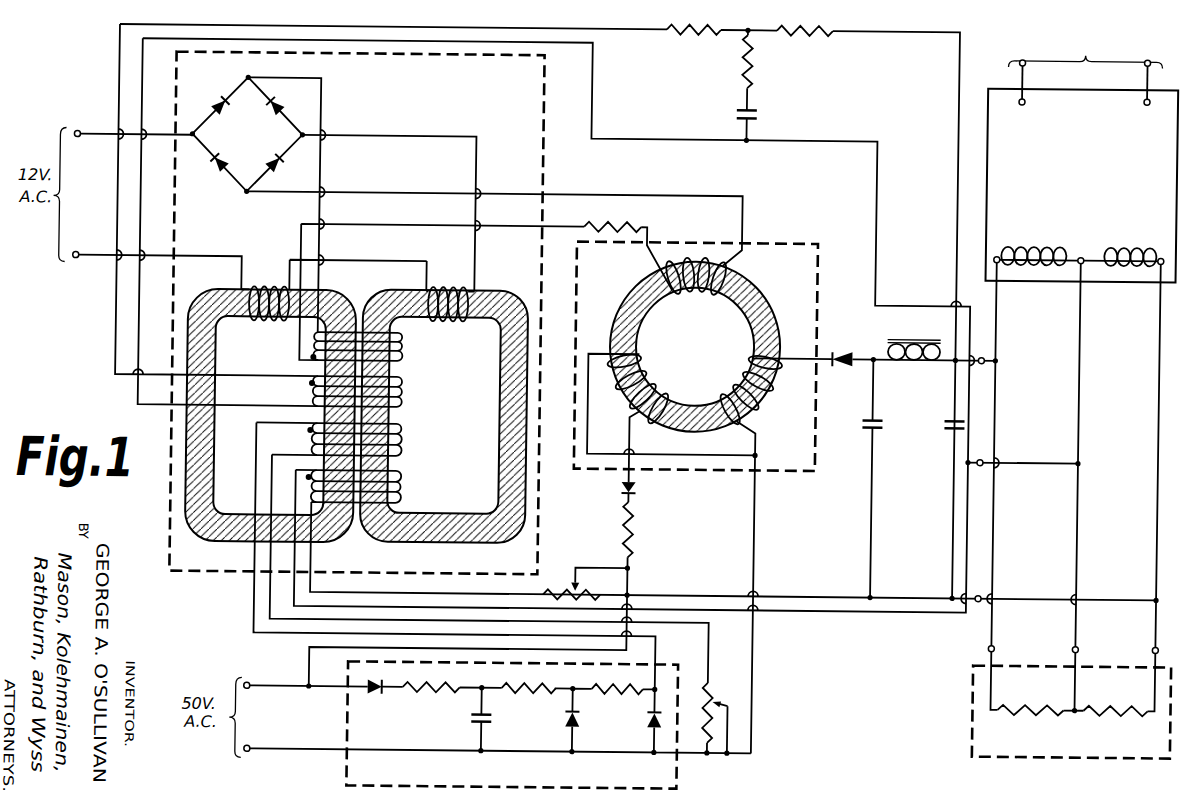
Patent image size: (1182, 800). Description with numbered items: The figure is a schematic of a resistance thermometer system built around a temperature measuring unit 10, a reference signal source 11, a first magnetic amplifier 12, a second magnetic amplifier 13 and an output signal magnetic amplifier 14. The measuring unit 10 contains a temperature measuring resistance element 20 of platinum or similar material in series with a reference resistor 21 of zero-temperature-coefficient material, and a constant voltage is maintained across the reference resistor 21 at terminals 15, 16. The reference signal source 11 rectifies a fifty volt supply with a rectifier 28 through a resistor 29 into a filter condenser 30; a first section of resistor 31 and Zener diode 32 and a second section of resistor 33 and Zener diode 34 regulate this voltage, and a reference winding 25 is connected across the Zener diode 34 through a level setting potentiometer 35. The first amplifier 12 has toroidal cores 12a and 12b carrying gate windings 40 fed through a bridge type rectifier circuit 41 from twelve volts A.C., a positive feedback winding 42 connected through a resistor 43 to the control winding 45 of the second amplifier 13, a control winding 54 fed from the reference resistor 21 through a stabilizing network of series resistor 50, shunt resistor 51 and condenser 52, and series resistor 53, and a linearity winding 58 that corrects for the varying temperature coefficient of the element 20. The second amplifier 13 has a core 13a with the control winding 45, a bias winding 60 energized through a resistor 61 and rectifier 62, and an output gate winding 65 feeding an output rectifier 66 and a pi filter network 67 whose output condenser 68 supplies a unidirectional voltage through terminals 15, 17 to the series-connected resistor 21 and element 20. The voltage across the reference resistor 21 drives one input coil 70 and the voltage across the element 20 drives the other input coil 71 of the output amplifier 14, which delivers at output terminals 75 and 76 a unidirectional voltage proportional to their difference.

The temperature measuring unit 10 is at (976, 737).
The reference signal source 11 is at (352, 758).
The first magnetic amplifier 12 is at (236, 574).
The toroidal core 12a is at (330, 296).
The toroidal core 12b is at (518, 288).
The second magnetic amplifier 13 is at (792, 234).
The core 13a is at (772, 302).
The output signal magnetic amplifier 14 is at (1094, 76).
The terminal 15 is at (990, 348).
The terminal 16 is at (987, 459).
The terminal 17 is at (987, 586).
The temperature measuring resistance element 20 is at (1138, 708).
The reference resistor 21 is at (1048, 708).
The reference winding 25 is at (434, 444).
The rectifier 28 is at (383, 692).
The resistor 29 is at (436, 692).
The filter condenser 30 is at (481, 716).
The resistor 31 is at (540, 691).
The Zener diode 32 is at (574, 716).
The resistor 33 is at (630, 691).
The Zener diode 34 is at (656, 716).
The level setting potentiometer 35 is at (737, 698).
The gate windings 40 is at (466, 282).
The bridge type rectifier circuit 41 is at (258, 143).
The positive feedback winding 42 is at (436, 357).
The resistor 43 is at (618, 220).
The control winding 45 is at (728, 276).
The series resistor 50 is at (806, 32).
The resistor 51 is at (756, 74).
The condenser 52 is at (760, 108).
The series resistor 53 is at (698, 30).
The control winding 54 is at (431, 402).
The linearity winding 58 is at (427, 496).
The bias winding 60 is at (646, 368).
The resistor 61 is at (641, 527).
The rectifier 62 is at (645, 482).
The output gate winding 65 is at (746, 370).
The output rectifier 66 is at (845, 344).
The pi filter network 67 is at (935, 394).
The output condenser 68 is at (950, 430).
The input coil 70 is at (1058, 243).
The input coil 71 is at (1146, 243).
The output terminal 75 is at (1020, 55).
The output terminal 76 is at (1150, 56).